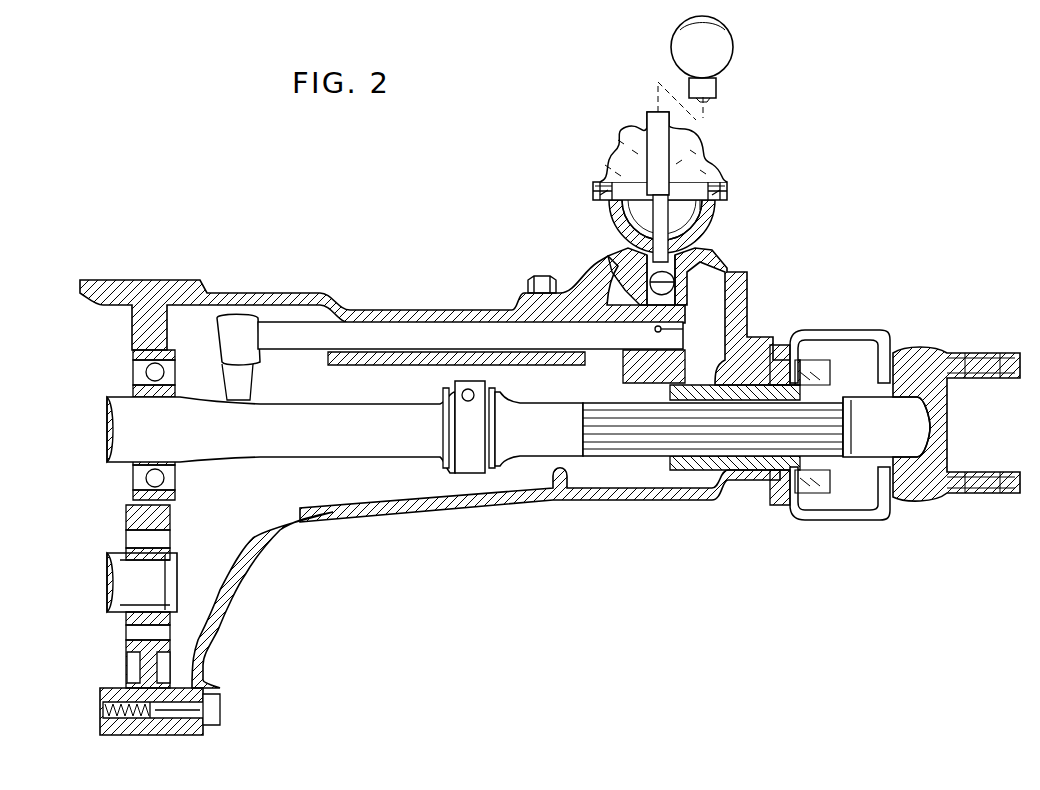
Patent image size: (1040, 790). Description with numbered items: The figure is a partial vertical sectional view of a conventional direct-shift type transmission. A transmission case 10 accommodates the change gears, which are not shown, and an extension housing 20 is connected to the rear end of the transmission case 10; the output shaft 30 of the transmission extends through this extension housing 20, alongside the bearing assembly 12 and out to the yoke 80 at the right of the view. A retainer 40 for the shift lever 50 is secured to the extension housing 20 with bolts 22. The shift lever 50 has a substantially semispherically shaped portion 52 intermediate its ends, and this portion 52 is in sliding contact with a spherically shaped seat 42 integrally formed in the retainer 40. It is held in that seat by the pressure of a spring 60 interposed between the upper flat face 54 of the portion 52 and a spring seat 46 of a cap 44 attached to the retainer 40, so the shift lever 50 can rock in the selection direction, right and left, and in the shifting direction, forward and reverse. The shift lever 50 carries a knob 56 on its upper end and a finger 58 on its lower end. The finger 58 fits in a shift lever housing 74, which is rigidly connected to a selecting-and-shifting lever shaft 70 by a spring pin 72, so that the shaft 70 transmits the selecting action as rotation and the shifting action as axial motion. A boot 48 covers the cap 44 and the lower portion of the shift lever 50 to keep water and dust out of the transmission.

The transmission case 10 is at (111, 279).
The bearing assembly 12 is at (142, 519).
The extension housing 20 is at (450, 491).
The bolts 22 is at (550, 282).
The output shaft 30 is at (348, 456).
The retainer 40 is at (718, 241).
The spherically shaped seat 42 is at (620, 240).
The cap 44 is at (718, 176).
The spring seat 46 is at (607, 170).
The boot 48 is at (613, 130).
The shift lever 50 is at (651, 114).
The substantially semispherically shaped portion 52 is at (710, 216).
The upper flat face 54 is at (602, 184).
The knob 56 is at (733, 70).
The finger 58 is at (678, 288).
The spring 60 is at (694, 172).
The selecting-and-shifting lever shaft 70 is at (307, 349).
The spring pin 72 is at (636, 366).
The shift lever housing 74 is at (683, 314).
The yoke 80 is at (895, 425).